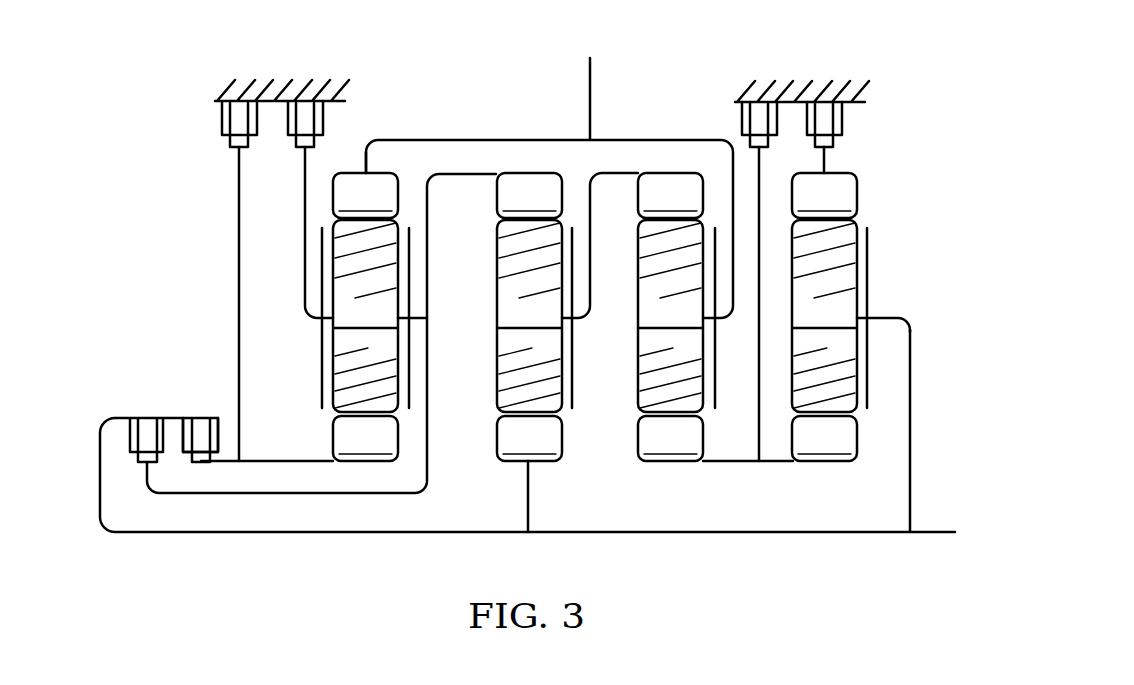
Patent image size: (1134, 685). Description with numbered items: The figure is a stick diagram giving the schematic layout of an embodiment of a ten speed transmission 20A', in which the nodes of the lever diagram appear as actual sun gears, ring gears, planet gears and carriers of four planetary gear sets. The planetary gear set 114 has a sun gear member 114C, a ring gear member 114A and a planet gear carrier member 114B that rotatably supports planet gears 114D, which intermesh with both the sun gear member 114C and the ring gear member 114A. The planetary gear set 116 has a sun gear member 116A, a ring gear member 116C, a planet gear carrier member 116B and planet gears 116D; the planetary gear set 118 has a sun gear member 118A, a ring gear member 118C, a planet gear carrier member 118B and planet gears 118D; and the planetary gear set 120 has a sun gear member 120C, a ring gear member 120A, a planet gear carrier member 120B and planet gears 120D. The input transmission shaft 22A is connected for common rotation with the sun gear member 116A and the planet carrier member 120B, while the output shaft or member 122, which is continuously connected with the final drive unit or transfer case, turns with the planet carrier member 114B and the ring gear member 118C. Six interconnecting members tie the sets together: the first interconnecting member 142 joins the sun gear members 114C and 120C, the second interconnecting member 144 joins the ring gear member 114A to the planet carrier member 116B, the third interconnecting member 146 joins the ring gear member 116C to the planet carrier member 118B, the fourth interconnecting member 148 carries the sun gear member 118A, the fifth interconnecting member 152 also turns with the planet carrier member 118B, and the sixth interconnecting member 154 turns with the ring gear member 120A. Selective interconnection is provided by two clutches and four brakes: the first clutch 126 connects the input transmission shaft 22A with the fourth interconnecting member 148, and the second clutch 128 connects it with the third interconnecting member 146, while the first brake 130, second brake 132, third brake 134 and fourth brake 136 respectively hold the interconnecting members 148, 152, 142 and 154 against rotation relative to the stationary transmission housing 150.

The ten speed transmission 20A' is at (922, 36).
The input transmission shaft 22A is at (937, 533).
The planetary gear set 114 is at (681, 348).
The ring gear member 114A is at (670, 195).
The planet gear carrier member 114B is at (715, 380).
The sun gear member 114C is at (670, 438).
The planet gears 114D is at (670, 316).
The planetary gear set 116 is at (541, 352).
The sun gear member 116A is at (529, 474).
The planet gear carrier member 116B is at (573, 348).
The ring gear member 116C is at (529, 195).
The planet gears 116D is at (529, 316).
The planetary gear set 118 is at (370, 370).
The sun gear member 118A is at (365, 438).
The planet gear carrier member 118B is at (410, 270).
The ring gear member 118C is at (365, 185).
The planet gears 118D is at (380, 316).
The planetary gear set 120 is at (872, 348).
The ring gear member 120A is at (824, 195).
The planet gear carrier member 120B is at (868, 273).
The sun gear member 120C is at (824, 438).
The planet gears 120D is at (851, 316).
The output shaft 122 is at (592, 110).
The first clutch 126 is at (220, 440).
The second clutch 128 is at (128, 437).
The first brake 130 is at (219, 115).
The second brake 132 is at (288, 128).
The third brake 134 is at (742, 120).
The fourth brake 136 is at (844, 122).
The first interconnecting member 142 is at (710, 462).
The second interconnecting member 144 is at (590, 257).
The third interconnecting member 146 is at (428, 365).
The fourth interconnecting member 148 is at (273, 462).
The transmission housing 150 is at (268, 88).
The fifth interconnecting member 152 is at (303, 212).
The sixth interconnecting member 154 is at (826, 165).